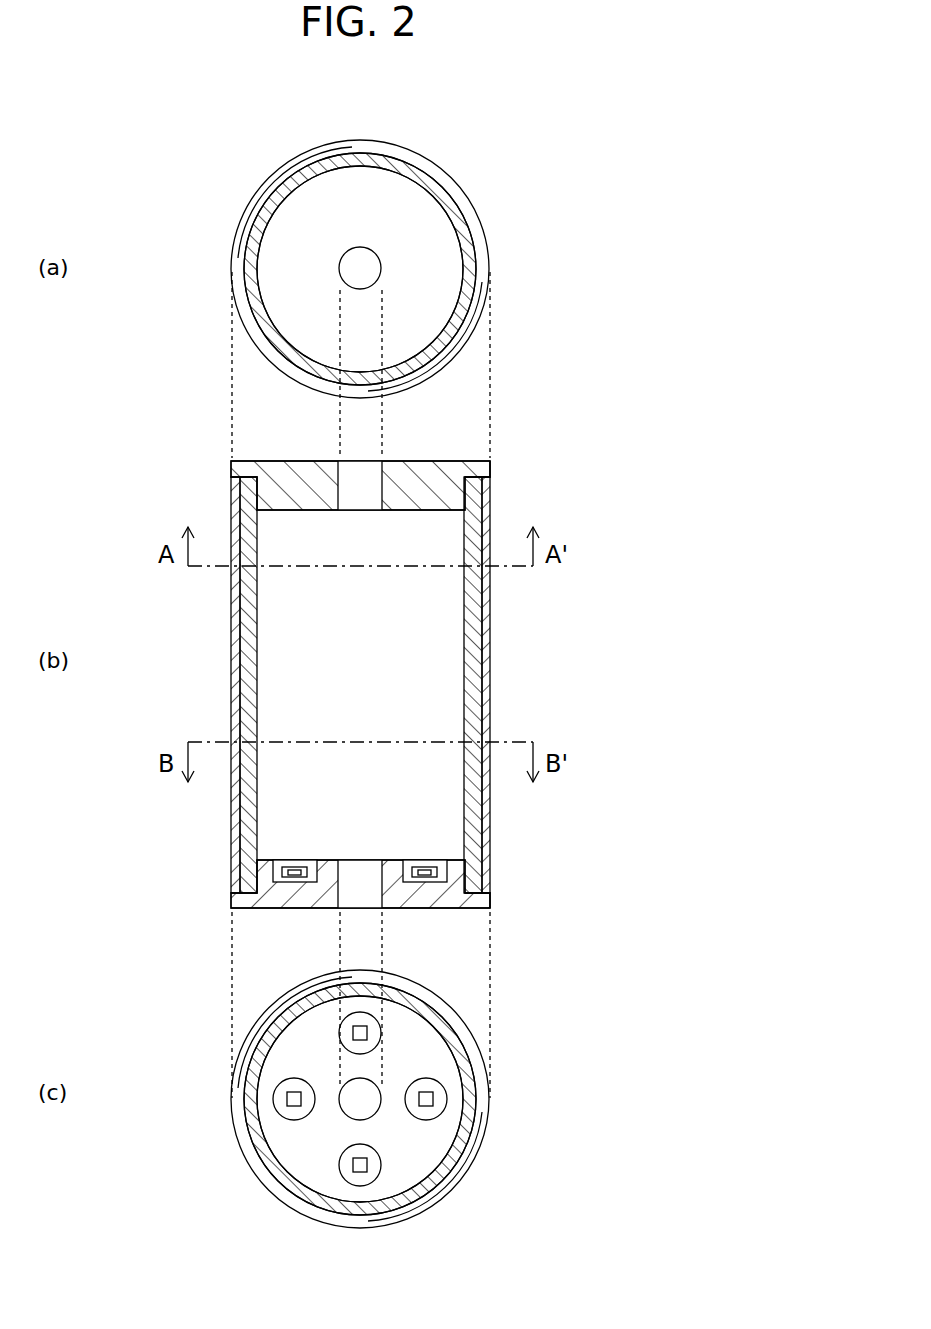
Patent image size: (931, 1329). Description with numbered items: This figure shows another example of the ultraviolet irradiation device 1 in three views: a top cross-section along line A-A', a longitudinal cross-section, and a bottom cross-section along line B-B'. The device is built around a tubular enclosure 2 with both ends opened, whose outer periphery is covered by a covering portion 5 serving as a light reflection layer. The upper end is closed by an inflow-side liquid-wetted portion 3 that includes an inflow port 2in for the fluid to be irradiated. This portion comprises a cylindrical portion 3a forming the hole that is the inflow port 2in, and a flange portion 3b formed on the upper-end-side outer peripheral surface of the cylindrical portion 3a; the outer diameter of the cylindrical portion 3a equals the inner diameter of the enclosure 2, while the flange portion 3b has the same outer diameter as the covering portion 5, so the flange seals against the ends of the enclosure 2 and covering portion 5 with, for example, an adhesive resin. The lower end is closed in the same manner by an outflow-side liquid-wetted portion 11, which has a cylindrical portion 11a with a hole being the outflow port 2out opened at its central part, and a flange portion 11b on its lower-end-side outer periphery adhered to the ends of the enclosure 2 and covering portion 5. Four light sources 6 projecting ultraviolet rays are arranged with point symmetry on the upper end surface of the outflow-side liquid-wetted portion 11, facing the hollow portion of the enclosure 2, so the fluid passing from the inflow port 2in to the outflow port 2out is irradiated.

The ultraviolet irradiation device 1 is at (586, 99).
The enclosure 2 is at (465, 235).
The inflow port 2in is at (352, 274).
The outflow port 2out is at (340, 892).
The inflow-side liquid-wetted portion 3 is at (447, 268).
The cylindrical portion 3a is at (397, 467).
The flange portion 3b is at (478, 468).
The covering portion 5 is at (458, 182).
The light source 6 is at (295, 868).
The outflow-side liquid-wetted portion 11 is at (450, 900).
The cylindrical portion 11a is at (395, 900).
The flange portion 11b is at (478, 902).